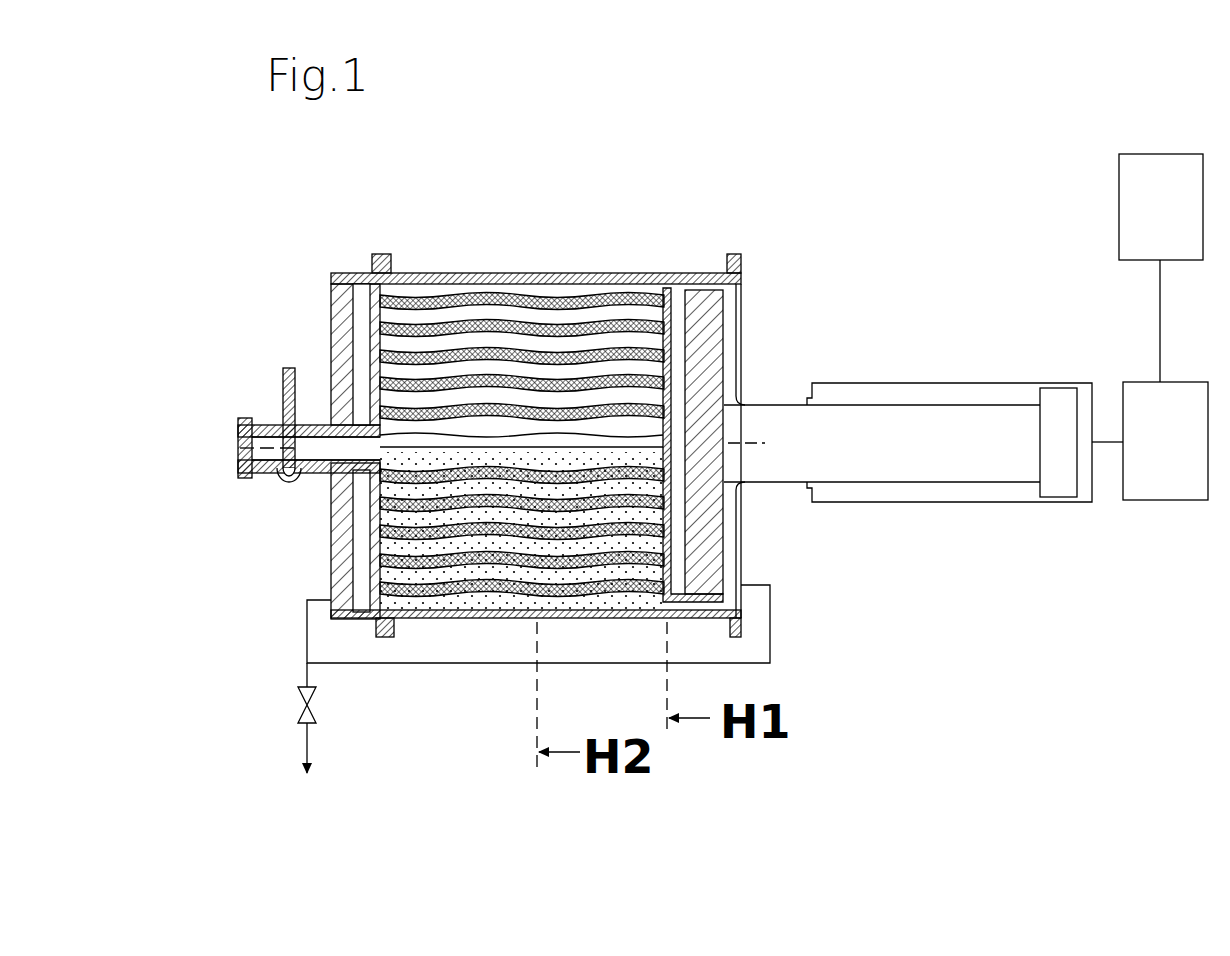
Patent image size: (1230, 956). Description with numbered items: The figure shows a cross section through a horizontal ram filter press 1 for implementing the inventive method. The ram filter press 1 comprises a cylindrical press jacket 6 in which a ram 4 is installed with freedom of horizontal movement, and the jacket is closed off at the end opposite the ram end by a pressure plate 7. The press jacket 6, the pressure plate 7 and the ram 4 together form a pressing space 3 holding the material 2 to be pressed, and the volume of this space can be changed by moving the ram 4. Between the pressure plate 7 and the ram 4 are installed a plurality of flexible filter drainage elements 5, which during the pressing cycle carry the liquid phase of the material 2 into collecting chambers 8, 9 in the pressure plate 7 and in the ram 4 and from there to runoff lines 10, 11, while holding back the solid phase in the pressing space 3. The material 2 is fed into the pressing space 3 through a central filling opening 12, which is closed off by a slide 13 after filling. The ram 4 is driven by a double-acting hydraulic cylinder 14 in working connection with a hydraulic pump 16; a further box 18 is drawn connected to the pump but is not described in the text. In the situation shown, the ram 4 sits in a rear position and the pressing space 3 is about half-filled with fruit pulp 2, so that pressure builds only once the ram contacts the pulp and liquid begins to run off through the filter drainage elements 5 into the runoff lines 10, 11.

The ram filter press 1 is at (768, 228).
The material to be pressed 2 is at (560, 452).
The pressing space 3 is at (433, 300).
The ram 4 is at (742, 560).
The flexible filter drainage elements 5 is at (610, 300).
The cylindrical press jacket 6 is at (522, 283).
The pressure plate 7 is at (330, 330).
The collecting chamber 8 is at (334, 530).
The collecting chamber 9 is at (742, 515).
The runoff line 10 is at (307, 640).
The runoff line 11 is at (772, 633).
The central filling opening 12 is at (257, 452).
The slide 13 is at (285, 383).
The double-acting hydraulic cylinder 14 is at (1090, 503).
The hydraulic pump 16 is at (1150, 462).
The computer / evaluation unit 18 is at (1145, 225).